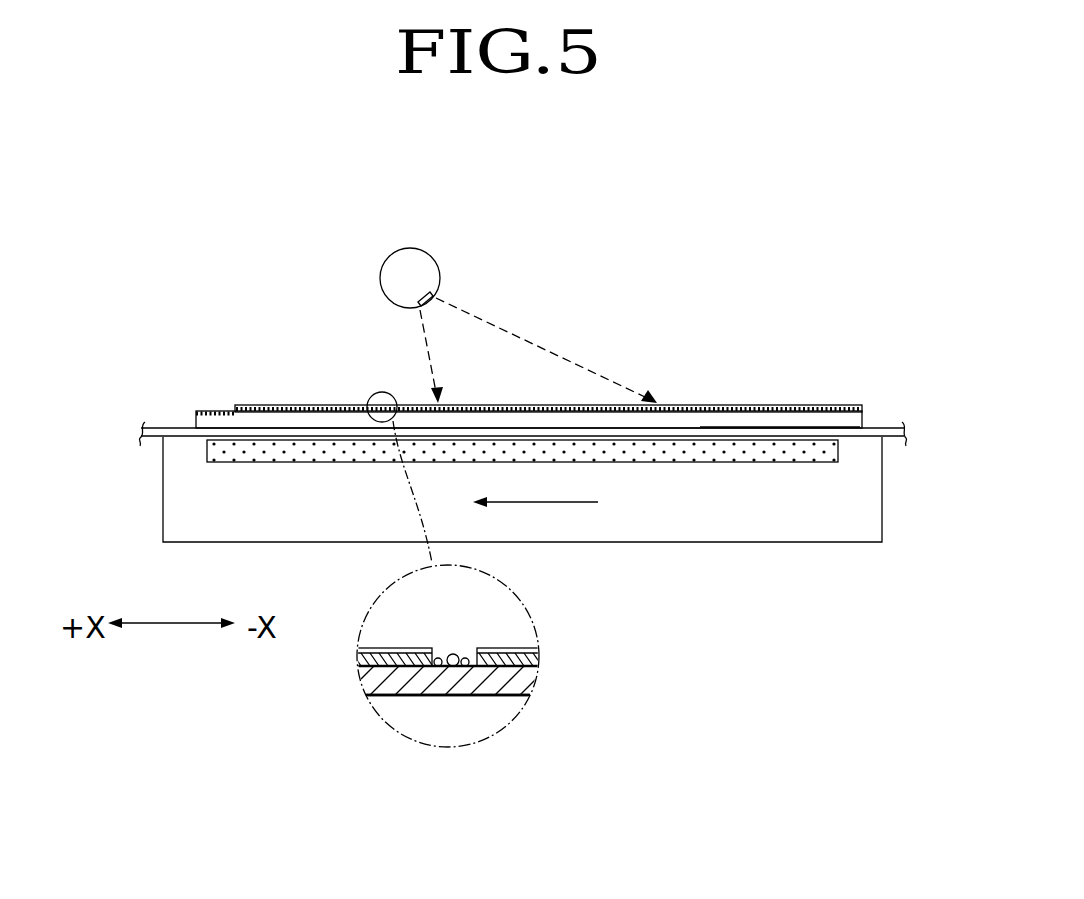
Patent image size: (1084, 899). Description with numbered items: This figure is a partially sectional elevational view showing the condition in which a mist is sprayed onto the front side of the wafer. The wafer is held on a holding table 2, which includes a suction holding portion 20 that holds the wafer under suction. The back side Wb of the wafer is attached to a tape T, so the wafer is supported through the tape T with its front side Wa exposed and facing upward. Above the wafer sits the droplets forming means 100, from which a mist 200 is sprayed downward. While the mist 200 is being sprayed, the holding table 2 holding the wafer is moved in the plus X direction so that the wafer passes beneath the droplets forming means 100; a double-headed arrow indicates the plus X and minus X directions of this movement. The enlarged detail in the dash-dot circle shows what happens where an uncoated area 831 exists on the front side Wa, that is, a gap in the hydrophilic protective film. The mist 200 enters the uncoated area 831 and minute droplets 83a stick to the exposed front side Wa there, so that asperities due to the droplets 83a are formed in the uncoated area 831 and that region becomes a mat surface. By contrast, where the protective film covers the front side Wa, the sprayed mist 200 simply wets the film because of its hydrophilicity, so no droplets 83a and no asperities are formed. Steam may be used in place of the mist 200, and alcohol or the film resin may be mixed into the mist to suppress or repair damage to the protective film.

The droplets forming means 100 is at (424, 266).
The mist 200 is at (582, 403).
The minute droplets 83a is at (453, 655).
The uncoated area 831 is at (437, 640).
The suction holding portion 20 is at (665, 447).
The holding table 2 is at (712, 510).
The tape T is at (887, 425).
The front side of the wafer Wa is at (533, 668).
The back side of the wafer Wb is at (798, 433).